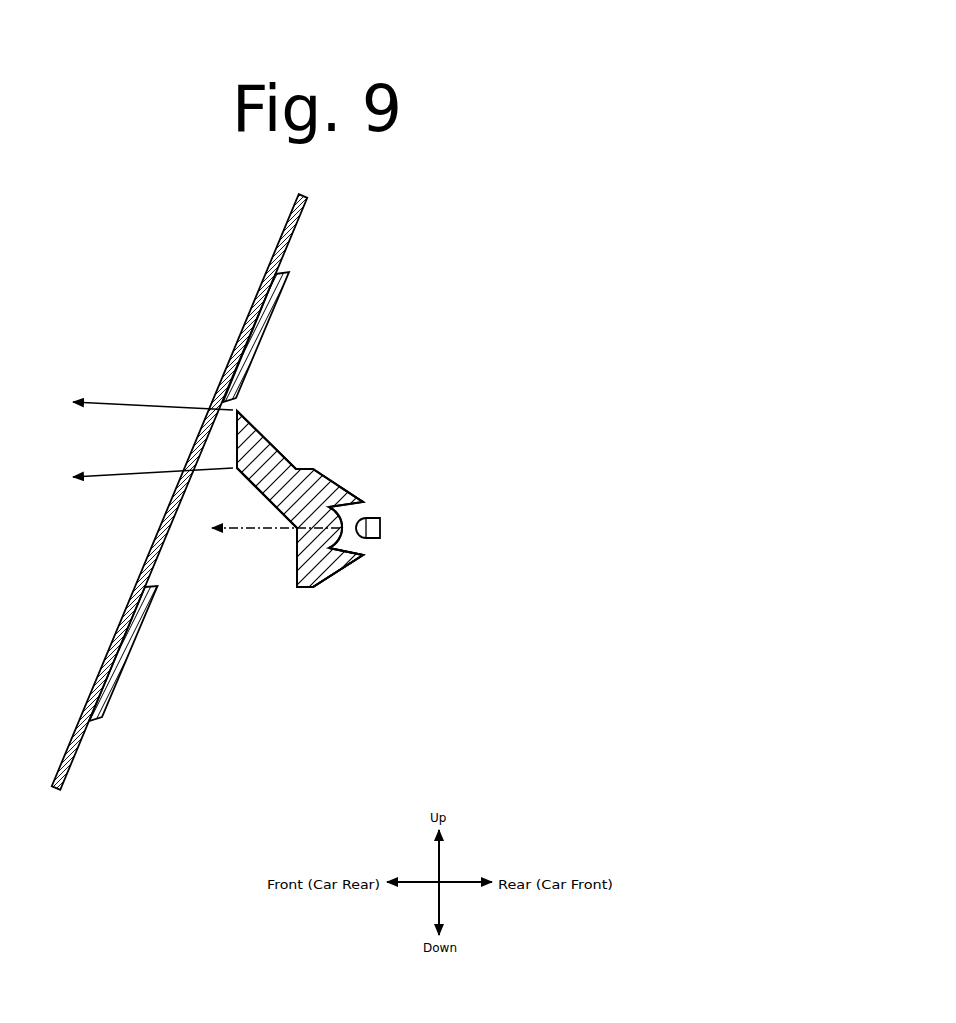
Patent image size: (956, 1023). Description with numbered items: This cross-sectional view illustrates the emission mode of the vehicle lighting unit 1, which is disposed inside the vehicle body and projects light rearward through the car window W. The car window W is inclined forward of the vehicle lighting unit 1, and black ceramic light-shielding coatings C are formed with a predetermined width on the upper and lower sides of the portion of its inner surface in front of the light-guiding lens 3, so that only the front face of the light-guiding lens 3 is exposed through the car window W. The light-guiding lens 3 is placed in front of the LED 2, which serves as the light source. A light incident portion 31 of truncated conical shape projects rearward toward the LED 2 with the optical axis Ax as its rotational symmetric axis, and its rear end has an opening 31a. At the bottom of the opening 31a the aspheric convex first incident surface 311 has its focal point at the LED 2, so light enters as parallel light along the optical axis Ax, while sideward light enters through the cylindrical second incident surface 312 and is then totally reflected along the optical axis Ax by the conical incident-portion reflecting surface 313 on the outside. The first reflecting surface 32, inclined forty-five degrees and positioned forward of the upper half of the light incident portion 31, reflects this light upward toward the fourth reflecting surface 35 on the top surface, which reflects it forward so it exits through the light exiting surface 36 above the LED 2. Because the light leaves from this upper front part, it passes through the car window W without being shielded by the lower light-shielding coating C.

The car window W is at (285, 235).
The light-shielding coating C is at (275, 295).
The vehicle lighting unit 1 is at (450, 400).
The light-emitting diode 2 is at (382, 530).
The light-guiding lens 3 is at (310, 610).
The light incident portion 31 is at (357, 582).
The opening 31a is at (347, 537).
The first incident surface 311 is at (335, 543).
The second incident surface 312 is at (360, 508).
The incident-portion reflecting surface 313 is at (340, 482).
The first reflecting surface 32 is at (262, 475).
The fourth reflecting surface 35 is at (262, 440).
The light exiting surface 36 is at (235, 447).
The optical axis Ax is at (262, 529).